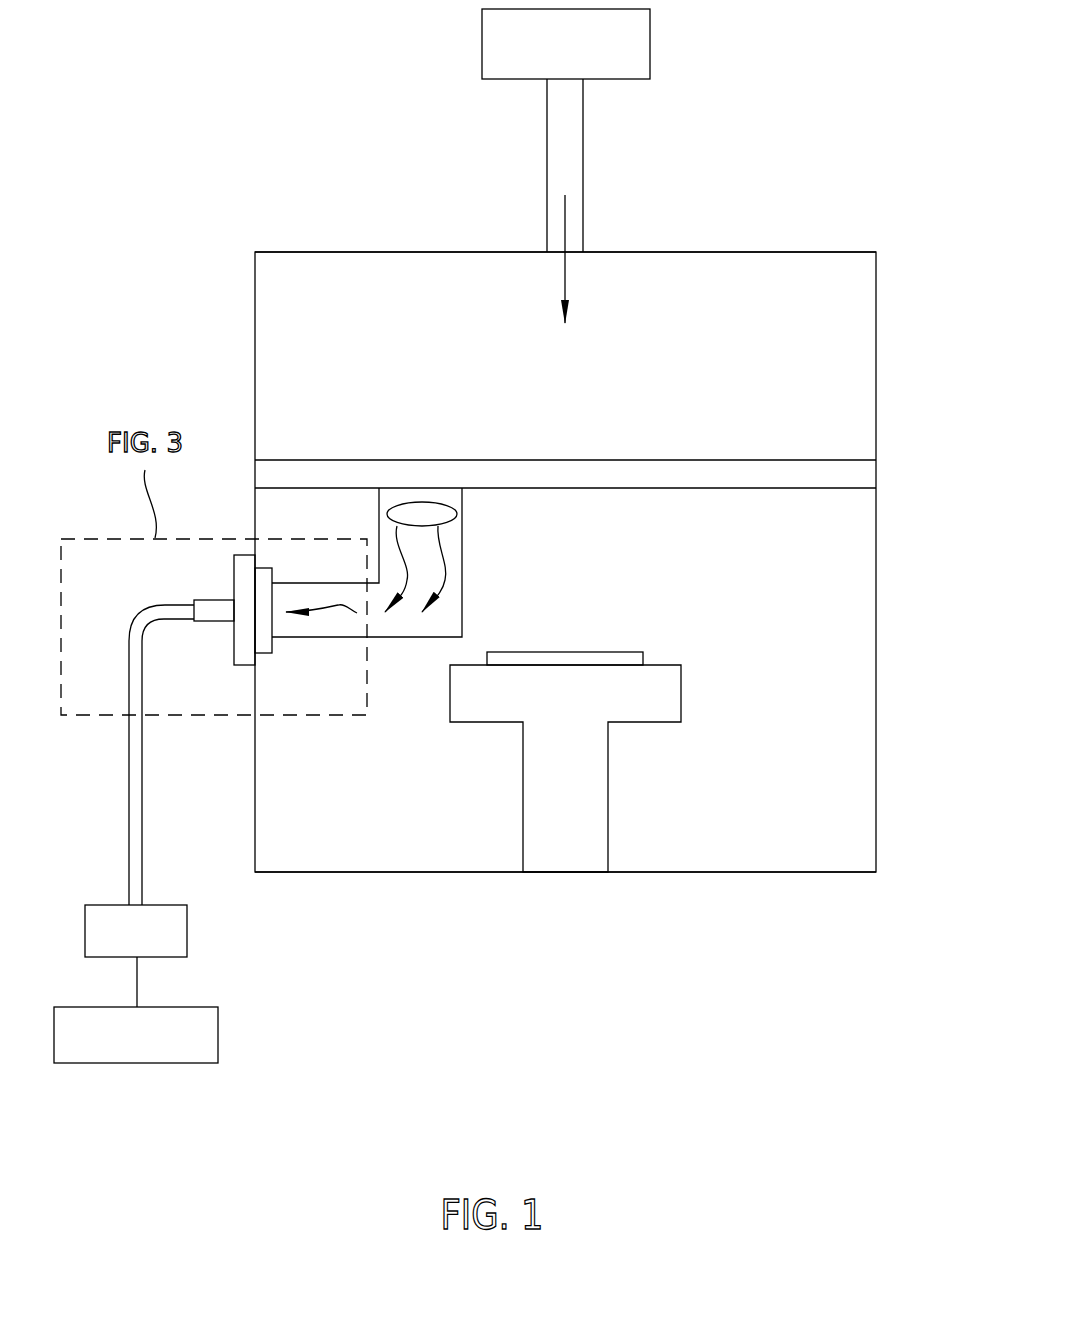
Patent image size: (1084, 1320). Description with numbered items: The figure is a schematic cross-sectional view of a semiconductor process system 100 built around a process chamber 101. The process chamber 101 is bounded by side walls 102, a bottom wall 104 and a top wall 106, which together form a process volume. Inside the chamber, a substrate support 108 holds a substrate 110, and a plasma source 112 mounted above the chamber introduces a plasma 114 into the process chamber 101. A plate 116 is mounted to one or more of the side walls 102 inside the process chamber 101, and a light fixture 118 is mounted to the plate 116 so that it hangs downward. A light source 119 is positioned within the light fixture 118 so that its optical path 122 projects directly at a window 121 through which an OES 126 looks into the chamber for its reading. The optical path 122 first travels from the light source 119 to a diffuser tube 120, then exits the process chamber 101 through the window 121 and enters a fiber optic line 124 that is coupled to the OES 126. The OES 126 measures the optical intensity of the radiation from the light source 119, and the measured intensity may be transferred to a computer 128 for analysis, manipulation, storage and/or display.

The semiconductor process system 100 is at (812, 153).
The process chamber 101 is at (203, 267).
The side walls 102 is at (255, 355).
The bottom wall 104 is at (720, 873).
The top wall 106 is at (382, 252).
The substrate support 108 is at (648, 750).
The substrate 110 is at (617, 652).
The plasma source 112 is at (620, 42).
The plasma 114 is at (565, 230).
The plate 116 is at (690, 490).
The light fixture 118 is at (463, 550).
The light source 119 is at (432, 502).
The diffuser tube 120 is at (312, 630).
The window 121 is at (265, 568).
The optical path 122 is at (396, 543).
The fiber optic line 124 is at (142, 798).
The OES 126 is at (187, 930).
The computer 128 is at (218, 1028).